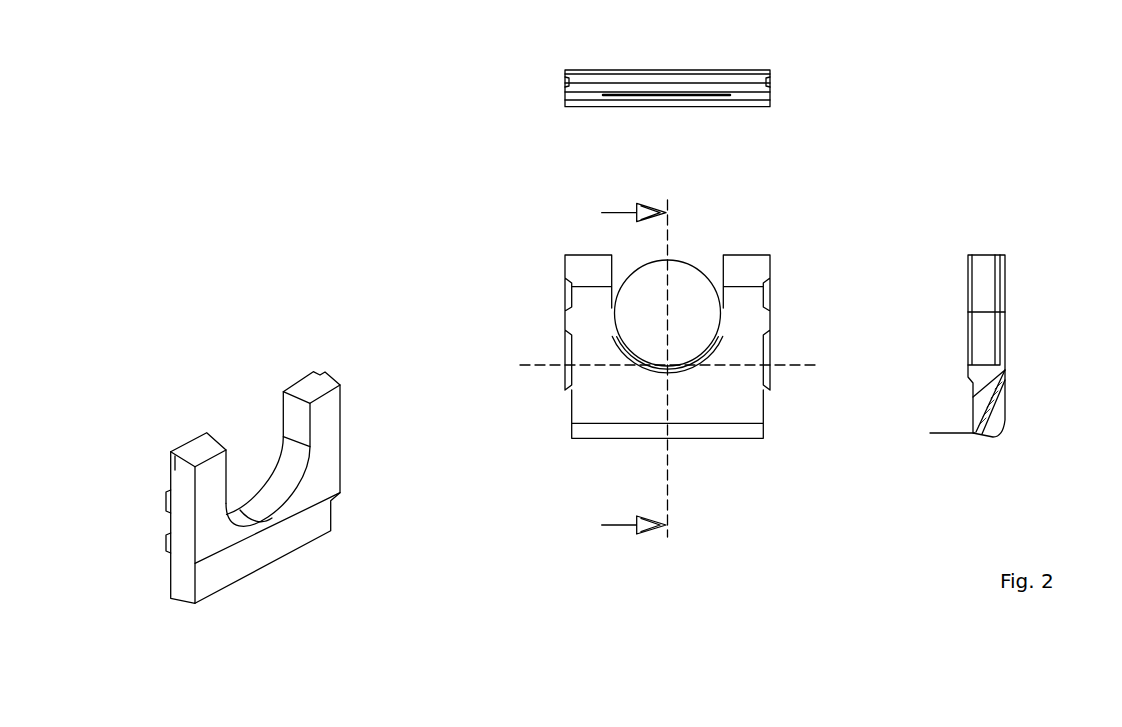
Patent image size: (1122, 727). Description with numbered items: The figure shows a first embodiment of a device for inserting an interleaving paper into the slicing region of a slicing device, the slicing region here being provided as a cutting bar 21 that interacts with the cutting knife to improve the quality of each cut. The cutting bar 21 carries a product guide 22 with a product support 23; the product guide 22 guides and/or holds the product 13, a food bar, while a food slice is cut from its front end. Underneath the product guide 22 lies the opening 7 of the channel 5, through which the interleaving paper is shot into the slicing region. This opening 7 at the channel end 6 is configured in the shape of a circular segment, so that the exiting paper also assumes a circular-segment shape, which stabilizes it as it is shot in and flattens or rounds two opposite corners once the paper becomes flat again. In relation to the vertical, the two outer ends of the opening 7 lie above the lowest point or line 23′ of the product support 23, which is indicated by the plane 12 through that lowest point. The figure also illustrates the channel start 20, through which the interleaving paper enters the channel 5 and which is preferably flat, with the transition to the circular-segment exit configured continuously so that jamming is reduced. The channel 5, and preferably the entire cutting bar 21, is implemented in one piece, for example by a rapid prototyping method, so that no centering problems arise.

The channel 5 is at (992, 412).
The channel end 6 is at (720, 360).
The opening 7 is at (690, 367).
The plane through the lowest point of the support 12 is at (783, 363).
The product 13 is at (668, 313).
The channel start 20 is at (633, 97).
The cutting bar 21 is at (538, 336).
The product guide 22 is at (223, 412).
The product support 23 is at (263, 460).
The lowest point/line of the product support 23′ is at (260, 507).